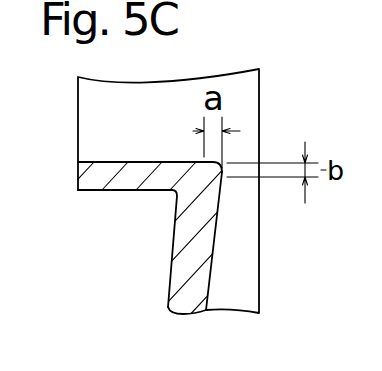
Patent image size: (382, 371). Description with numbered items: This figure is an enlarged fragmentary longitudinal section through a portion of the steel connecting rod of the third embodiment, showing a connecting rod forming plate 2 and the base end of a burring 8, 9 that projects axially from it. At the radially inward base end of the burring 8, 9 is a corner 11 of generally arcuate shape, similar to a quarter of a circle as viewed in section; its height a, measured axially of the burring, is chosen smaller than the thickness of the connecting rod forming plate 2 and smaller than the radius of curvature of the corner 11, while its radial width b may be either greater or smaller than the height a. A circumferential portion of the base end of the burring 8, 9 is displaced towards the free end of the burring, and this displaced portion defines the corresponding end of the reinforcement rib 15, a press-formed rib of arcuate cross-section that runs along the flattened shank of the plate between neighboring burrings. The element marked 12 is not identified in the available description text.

The connecting rod forming plate 2 is at (250, 278).
The burring 8 is at (131, 207).
The burring 9 is at (88, 180).
The corner 11 is at (219, 161).
The lug 12 is at (169, 200).
The reinforcement rib 15 is at (182, 292).